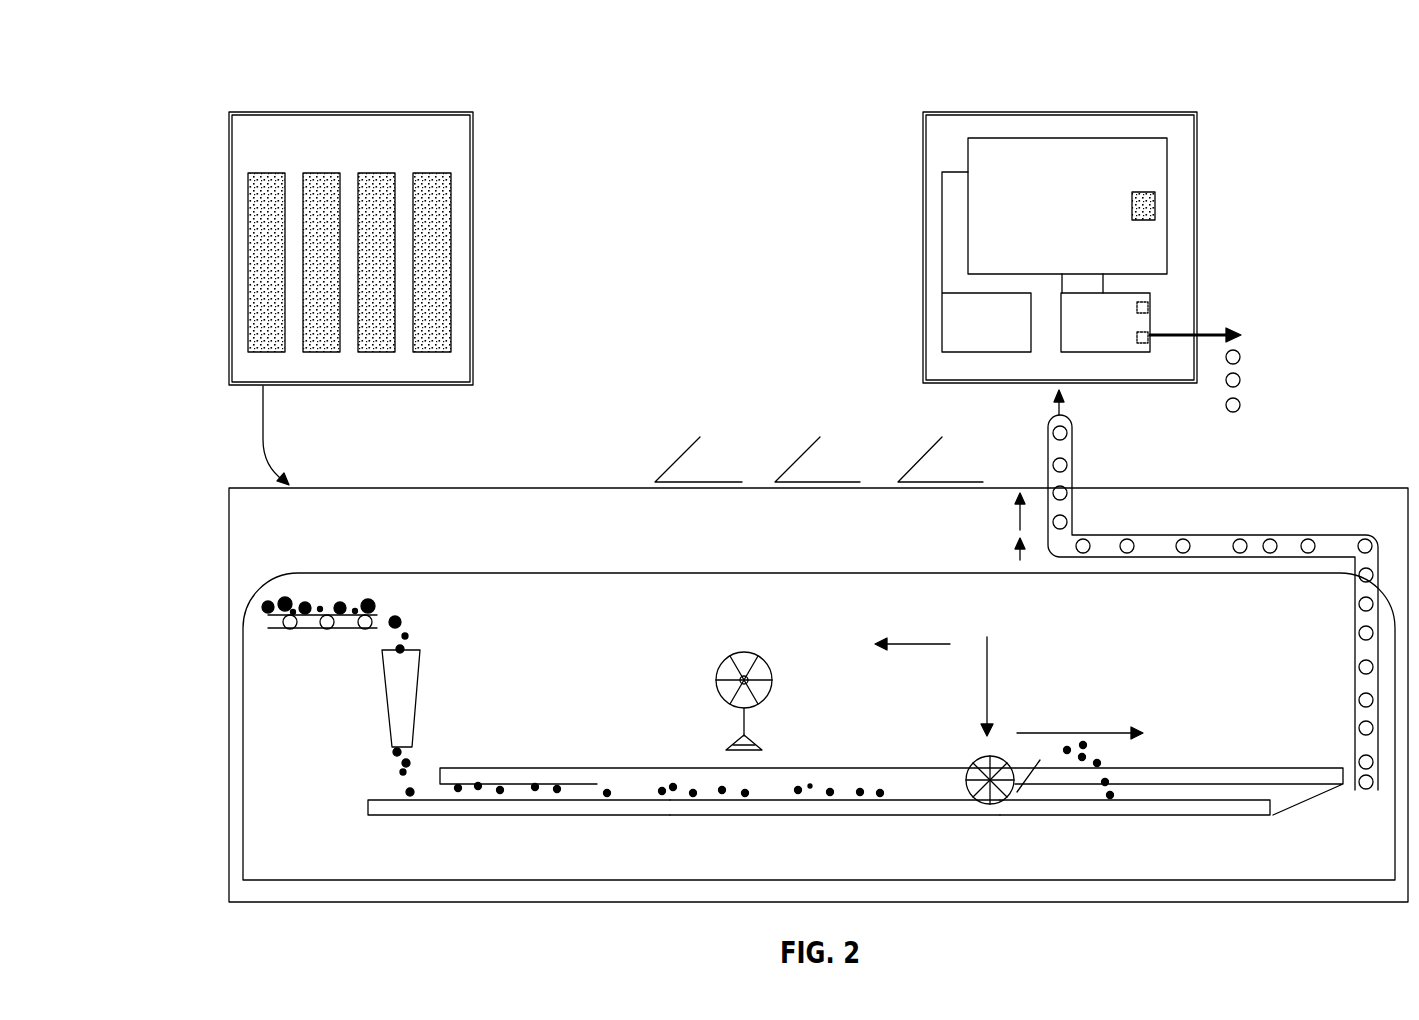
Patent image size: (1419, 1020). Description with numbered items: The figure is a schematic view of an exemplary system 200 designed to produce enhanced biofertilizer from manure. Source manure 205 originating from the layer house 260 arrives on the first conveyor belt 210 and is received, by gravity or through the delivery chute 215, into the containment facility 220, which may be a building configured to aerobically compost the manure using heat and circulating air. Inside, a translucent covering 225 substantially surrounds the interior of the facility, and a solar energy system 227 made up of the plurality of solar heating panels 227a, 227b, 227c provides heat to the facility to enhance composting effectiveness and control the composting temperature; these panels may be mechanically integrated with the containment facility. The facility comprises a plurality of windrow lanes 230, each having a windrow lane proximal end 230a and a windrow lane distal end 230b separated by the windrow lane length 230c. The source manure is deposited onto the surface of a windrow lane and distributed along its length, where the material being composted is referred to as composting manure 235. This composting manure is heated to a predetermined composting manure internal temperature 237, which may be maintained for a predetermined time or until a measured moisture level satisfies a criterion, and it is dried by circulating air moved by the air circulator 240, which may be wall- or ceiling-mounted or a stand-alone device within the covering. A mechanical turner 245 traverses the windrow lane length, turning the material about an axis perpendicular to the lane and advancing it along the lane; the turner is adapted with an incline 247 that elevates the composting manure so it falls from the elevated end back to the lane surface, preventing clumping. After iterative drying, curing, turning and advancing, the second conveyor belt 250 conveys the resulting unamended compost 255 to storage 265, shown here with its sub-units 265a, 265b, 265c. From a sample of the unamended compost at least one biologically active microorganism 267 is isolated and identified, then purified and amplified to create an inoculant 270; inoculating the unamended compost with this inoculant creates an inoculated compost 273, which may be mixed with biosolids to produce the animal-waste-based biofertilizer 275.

The system 200 is at (181, 74).
The source manure 205 is at (272, 455).
The first conveyor belt 210 is at (305, 631).
The delivery chute 215 is at (418, 700).
The containment facility 220 is at (316, 903).
The translucent covering 225 is at (522, 572).
The solar energy system 227 is at (847, 406).
The solar heating panel 227a is at (700, 457).
The solar heating panel 227b is at (835, 457).
The solar heating panel 227c is at (957, 457).
The windrow lane 230 is at (845, 767).
The windrow lane proximal end 230a is at (380, 816).
The windrow lane distal end 230b is at (1255, 816).
The windrow lane length 230c is at (822, 816).
The composting manure 235 is at (608, 791).
The composting manure internal temperature 237 is at (678, 780).
The air circulator 240 is at (766, 660).
The turner 245 is at (971, 760).
The incline 247 is at (1040, 760).
The second conveyor belt 250 is at (1365, 794).
The unamended compost 255 is at (1073, 463).
The layer house 260 is at (370, 157).
The storage 265 is at (1099, 251).
The processor 265a is at (1100, 220).
The memory 265b is at (1020, 340).
The interface 265c is at (1136, 340).
The biologically active microorganism 267 is at (1147, 192).
The inoculant 270 is at (1148, 306).
The inoculated compost 273 is at (1143, 345).
The animal-waste-based biofertilizer 275 is at (1243, 350).